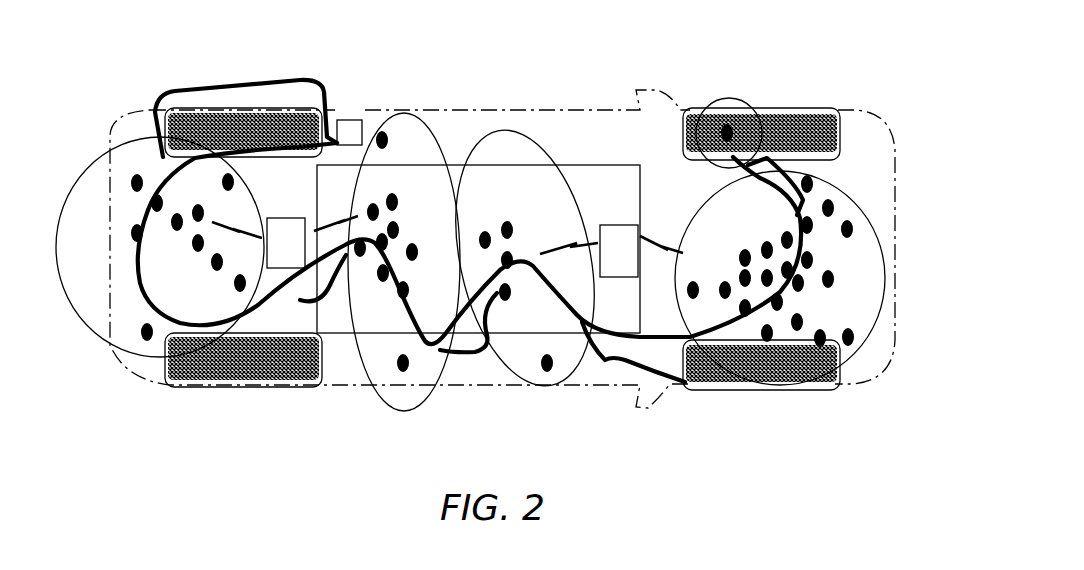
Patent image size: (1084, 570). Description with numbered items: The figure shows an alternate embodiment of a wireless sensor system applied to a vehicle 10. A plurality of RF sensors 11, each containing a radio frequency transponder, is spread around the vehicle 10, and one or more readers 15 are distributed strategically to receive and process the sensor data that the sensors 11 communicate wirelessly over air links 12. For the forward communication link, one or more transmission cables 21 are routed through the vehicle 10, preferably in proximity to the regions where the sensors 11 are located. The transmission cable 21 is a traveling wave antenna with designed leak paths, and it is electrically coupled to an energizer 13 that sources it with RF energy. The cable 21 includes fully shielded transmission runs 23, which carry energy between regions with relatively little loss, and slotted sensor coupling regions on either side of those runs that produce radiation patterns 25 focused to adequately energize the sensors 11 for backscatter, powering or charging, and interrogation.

The vehicle 10 is at (563, 110).
The sensors 11 is at (492, 295).
The air links 12 is at (230, 222).
The energizer 13 is at (364, 122).
The readers 15 is at (288, 217).
The transmission cable 21 is at (602, 337).
The fully shielded transmission runs 23 is at (233, 82).
The radiation patterns 25 is at (108, 152).